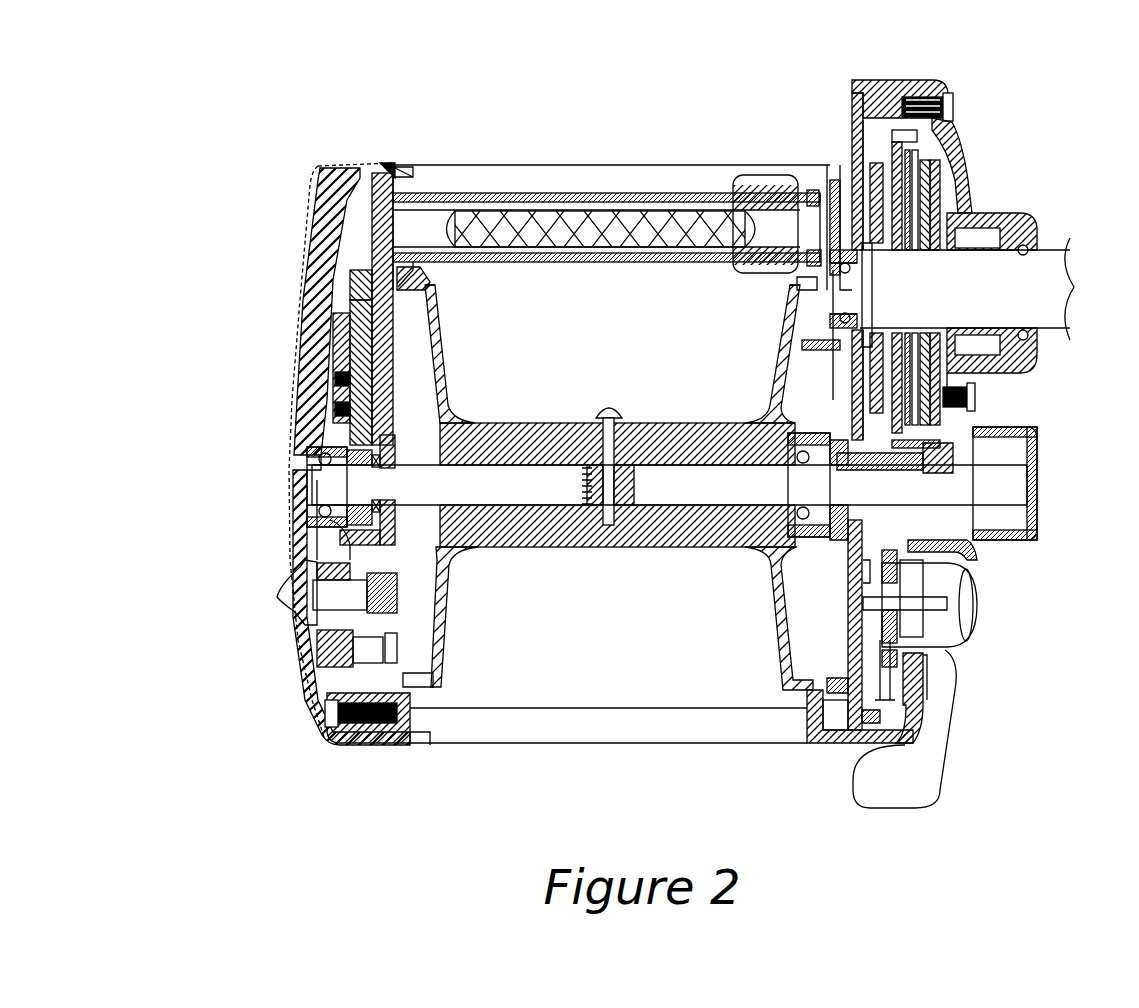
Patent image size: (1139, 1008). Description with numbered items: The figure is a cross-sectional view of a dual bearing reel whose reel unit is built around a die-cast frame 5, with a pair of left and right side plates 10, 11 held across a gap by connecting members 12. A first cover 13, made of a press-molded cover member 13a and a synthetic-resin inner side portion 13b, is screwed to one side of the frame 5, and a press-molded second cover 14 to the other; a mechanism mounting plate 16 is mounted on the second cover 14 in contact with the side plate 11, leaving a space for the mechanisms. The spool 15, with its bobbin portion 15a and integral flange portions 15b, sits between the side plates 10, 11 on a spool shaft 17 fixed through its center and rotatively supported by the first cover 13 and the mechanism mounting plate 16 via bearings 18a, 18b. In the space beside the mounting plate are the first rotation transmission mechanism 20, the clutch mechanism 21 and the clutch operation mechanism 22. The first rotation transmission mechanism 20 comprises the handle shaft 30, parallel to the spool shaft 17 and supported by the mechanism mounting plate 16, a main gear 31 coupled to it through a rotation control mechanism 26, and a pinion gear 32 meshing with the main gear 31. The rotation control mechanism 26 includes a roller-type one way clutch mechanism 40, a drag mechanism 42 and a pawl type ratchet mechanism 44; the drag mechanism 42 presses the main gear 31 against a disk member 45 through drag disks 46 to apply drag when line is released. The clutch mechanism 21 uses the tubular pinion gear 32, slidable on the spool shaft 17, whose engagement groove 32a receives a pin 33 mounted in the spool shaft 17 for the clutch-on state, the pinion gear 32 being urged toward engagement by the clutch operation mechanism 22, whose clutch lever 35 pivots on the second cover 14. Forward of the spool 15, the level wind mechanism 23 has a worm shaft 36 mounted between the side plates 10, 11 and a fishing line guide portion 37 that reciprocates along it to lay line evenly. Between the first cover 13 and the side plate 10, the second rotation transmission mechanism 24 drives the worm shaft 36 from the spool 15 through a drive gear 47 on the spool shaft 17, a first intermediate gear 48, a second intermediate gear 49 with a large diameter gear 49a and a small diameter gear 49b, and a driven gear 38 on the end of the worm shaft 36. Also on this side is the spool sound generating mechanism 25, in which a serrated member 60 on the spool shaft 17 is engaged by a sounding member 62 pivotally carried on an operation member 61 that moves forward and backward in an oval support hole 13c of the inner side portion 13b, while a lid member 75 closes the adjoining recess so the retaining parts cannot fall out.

The frame 5 is at (420, 745).
The side plate 10 is at (430, 165).
The side plate 11 is at (806, 165).
The connecting members 12 is at (565, 728).
The first cover 13 is at (325, 200).
The cover member 13a is at (338, 163).
The inner side portion 13b is at (380, 165).
The support hole 13c is at (330, 625).
The second cover 14 is at (930, 695).
The spool 15 is at (610, 483).
The bobbin portion 15a is at (520, 425).
The flange portions 15b is at (788, 330).
The mechanism mounting plate 16 is at (878, 80).
The spool shaft 17 is at (670, 493).
The bearing 18a is at (310, 440).
The bearing 18b is at (805, 440).
The first rotation transmission mechanism 20 is at (950, 160).
The clutch mechanism 21 is at (762, 510).
The clutch operation mechanism 22 is at (955, 600).
The level wind mechanism 23 is at (660, 178).
The second rotation transmission mechanism 24 is at (340, 280).
The spool sound generating mechanism 25 is at (358, 545).
The rotation control mechanism 26 is at (935, 140).
The handle shaft 30 is at (1060, 255).
The main gear 31 is at (928, 100).
The pinion gear 32 is at (1000, 485).
The engagement groove 32a is at (790, 597).
The pin 33 is at (803, 470).
The clutch lever 35 is at (940, 775).
The worm shaft 36 is at (598, 210).
The fishing line guide portion 37 is at (752, 175).
The driven gear 38 is at (395, 165).
The one way clutch mechanism 40 is at (1010, 230).
The drag mechanism 42 is at (935, 190).
The pawl type ratchet mechanism 44 is at (855, 118).
The disk member 45 is at (985, 358).
The drag disks 46 is at (975, 398).
The drive gear 47 is at (350, 420).
The first intermediate gear 48 is at (350, 388).
The second intermediate gear 49 is at (352, 330).
The large diameter gear 49a is at (352, 285).
The small diameter gear 49b is at (430, 283).
The serrated member 60 is at (392, 435).
The operation member 61 is at (280, 600).
The sounding member 62 is at (405, 580).
The lid member 75 is at (330, 700).